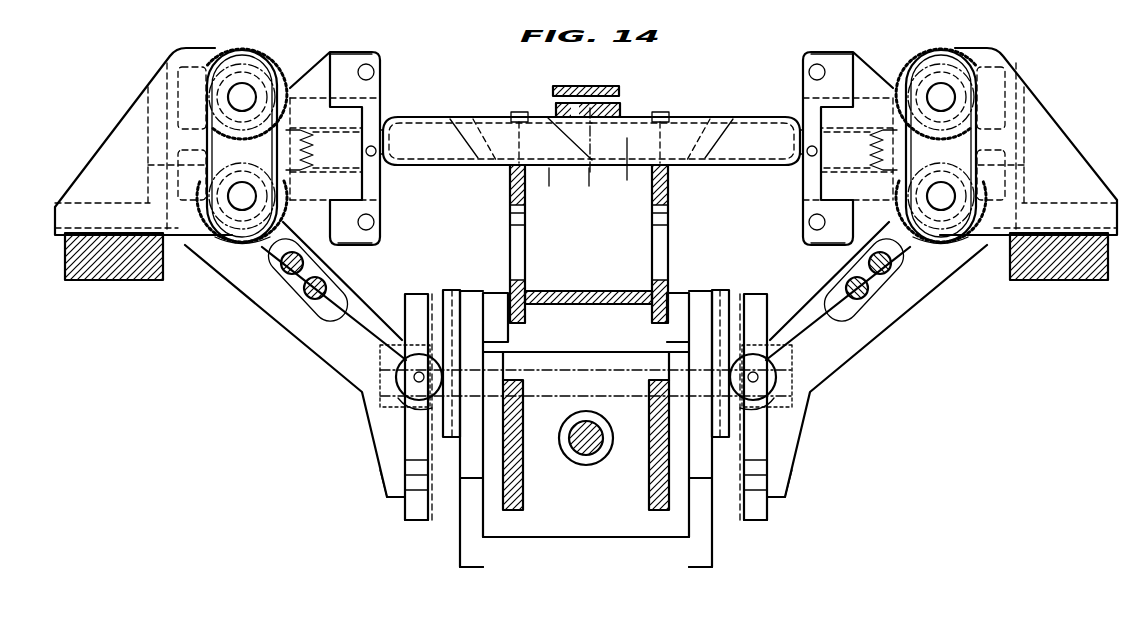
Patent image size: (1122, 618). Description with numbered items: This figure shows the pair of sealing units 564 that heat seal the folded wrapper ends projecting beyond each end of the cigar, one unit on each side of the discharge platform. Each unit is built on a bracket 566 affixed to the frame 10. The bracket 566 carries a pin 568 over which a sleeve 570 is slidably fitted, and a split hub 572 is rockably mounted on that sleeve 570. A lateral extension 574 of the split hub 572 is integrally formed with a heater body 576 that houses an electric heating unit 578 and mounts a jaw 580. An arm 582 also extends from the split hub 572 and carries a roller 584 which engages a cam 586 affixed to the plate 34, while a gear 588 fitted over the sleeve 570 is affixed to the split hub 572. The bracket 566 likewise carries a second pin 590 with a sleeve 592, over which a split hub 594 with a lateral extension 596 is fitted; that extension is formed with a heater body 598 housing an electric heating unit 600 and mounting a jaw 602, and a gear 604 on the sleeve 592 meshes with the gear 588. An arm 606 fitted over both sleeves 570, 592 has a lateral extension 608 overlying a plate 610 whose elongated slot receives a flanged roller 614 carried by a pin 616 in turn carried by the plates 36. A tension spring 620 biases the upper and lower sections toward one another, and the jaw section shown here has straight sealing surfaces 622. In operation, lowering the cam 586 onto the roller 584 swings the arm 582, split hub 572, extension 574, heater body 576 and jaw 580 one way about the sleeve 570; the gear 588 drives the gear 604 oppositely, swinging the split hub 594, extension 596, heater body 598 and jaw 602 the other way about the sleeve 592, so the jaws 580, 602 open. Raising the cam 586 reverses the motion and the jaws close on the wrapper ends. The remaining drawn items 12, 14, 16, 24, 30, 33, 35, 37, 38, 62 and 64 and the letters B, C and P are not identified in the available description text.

The frame 10 is at (108, 262).
The cross bar 12 is at (582, 290).
The center plate 14 is at (586, 189).
The upright post 16 is at (508, 185).
The clamp 24 is at (513, 113).
The bearing wall 30 is at (526, 486).
The plate edge 33 is at (556, 108).
The plate 34 is at (468, 568).
The slotted plate 35 is at (620, 104).
The plates 36 is at (488, 540).
The top plate 37 is at (600, 88).
The bottom plate 38 is at (583, 538).
The shaft 62 is at (568, 438).
The bearing 64 is at (606, 436).
The sealing unit 564 is at (320, 42).
The bracket 566 is at (118, 138).
The pin 568 is at (232, 203).
The sleeve 570 is at (148, 166).
The split hub 572 is at (160, 212).
The lateral extension 574 is at (374, 180).
The heater body 576 is at (362, 240).
The electric heating unit 578 is at (376, 222).
The jaw 580 is at (374, 198).
The arm 582 is at (302, 314).
The roller 584 is at (412, 420).
The cam 586 is at (432, 335).
The gear 588 is at (242, 246).
The pin 590 is at (248, 92).
The sleeve 592 is at (226, 112).
The split hub 594 is at (188, 68).
The lateral extension 596 is at (382, 98).
The heater body 598 is at (365, 56).
The electric heating unit 600 is at (370, 72).
The jaw 602 is at (591, 149).
The gear 604 is at (243, 48).
The arm 606 is at (312, 346).
The lateral extension 608 is at (396, 502).
The plate 610 is at (418, 522).
The flanged roller 614 is at (428, 413).
The pin 616 is at (583, 376).
The tension spring 620 is at (591, 150).
The straight sealing surfaces 622 is at (397, 134).
The bar section B is at (563, 139).
The center line C is at (610, 159).
The pin P is at (549, 189).